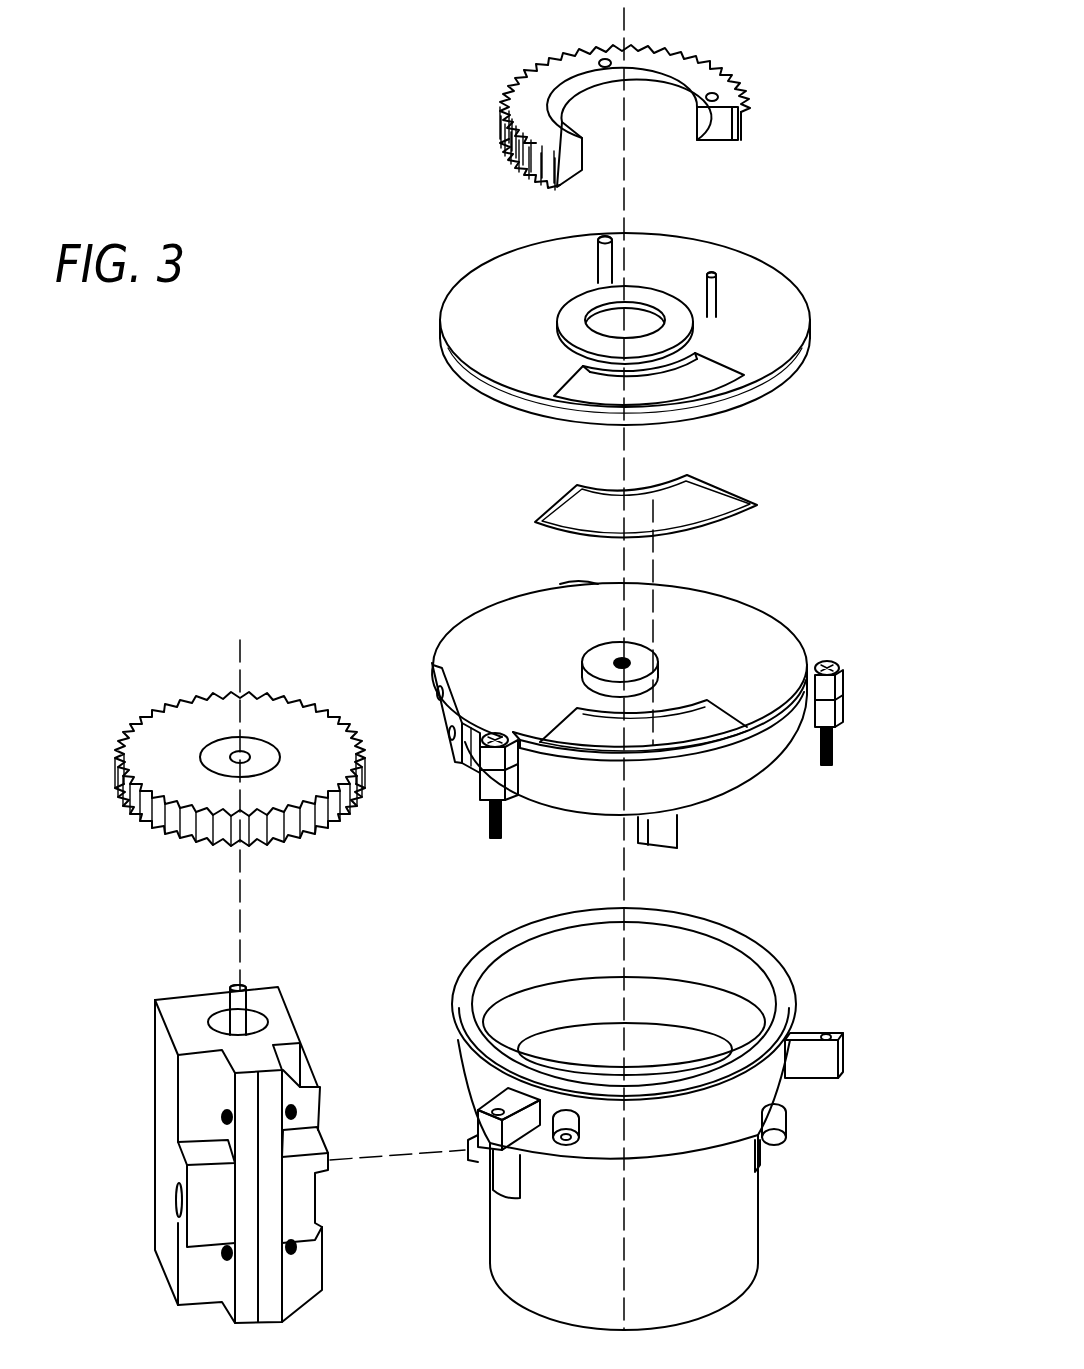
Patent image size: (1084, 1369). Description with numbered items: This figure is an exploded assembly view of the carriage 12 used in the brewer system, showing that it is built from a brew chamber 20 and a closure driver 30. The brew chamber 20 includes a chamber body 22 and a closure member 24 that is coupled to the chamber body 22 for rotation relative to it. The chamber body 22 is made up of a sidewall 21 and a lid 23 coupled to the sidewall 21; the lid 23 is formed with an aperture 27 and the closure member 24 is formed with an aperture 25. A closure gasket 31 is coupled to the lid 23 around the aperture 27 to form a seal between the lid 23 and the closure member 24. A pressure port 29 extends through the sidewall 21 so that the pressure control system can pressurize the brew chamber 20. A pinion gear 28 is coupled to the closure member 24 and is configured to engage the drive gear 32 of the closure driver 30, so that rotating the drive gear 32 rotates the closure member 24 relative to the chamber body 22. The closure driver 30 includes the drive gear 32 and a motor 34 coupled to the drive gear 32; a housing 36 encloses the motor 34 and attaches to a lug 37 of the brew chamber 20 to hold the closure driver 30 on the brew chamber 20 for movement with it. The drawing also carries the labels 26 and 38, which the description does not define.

The carriage 12 is at (285, 508).
The brew chamber 20 is at (420, 167).
The sidewall 21 is at (790, 955).
The chamber body 22 is at (887, 932).
The lid 23 is at (755, 612).
The closure member 24 is at (752, 288).
The aperture 25 is at (706, 382).
The cavity 26 is at (672, 1064).
The aperture 27 is at (700, 733).
The pinion gear 28 is at (722, 76).
The pressure port 29 is at (567, 1152).
The closure driver 30 is at (205, 690).
The closure gasket 31 is at (728, 480).
The drive gear 32 is at (290, 727).
The motor 34 is at (213, 1022).
The housing 36 is at (162, 1115).
The lug 37 is at (458, 1158).
The stud 38 is at (790, 1132).